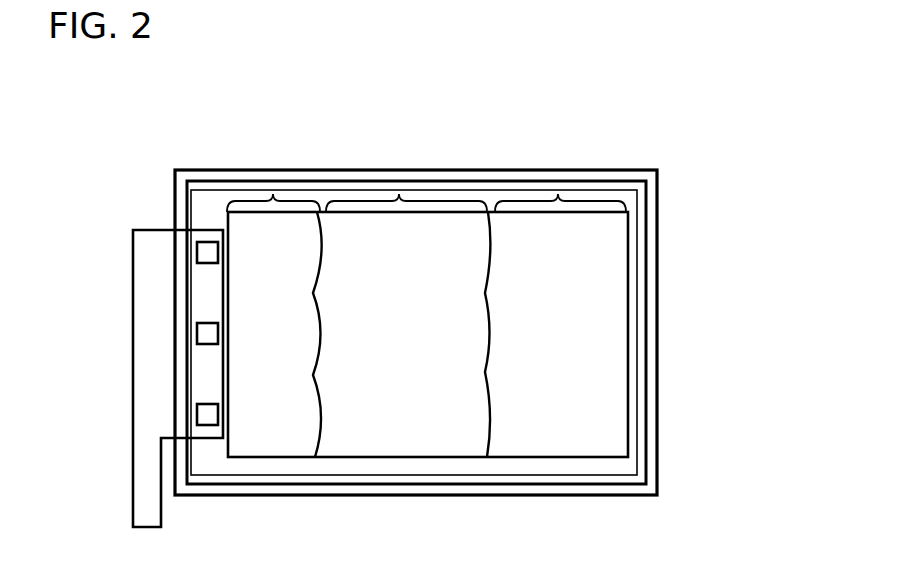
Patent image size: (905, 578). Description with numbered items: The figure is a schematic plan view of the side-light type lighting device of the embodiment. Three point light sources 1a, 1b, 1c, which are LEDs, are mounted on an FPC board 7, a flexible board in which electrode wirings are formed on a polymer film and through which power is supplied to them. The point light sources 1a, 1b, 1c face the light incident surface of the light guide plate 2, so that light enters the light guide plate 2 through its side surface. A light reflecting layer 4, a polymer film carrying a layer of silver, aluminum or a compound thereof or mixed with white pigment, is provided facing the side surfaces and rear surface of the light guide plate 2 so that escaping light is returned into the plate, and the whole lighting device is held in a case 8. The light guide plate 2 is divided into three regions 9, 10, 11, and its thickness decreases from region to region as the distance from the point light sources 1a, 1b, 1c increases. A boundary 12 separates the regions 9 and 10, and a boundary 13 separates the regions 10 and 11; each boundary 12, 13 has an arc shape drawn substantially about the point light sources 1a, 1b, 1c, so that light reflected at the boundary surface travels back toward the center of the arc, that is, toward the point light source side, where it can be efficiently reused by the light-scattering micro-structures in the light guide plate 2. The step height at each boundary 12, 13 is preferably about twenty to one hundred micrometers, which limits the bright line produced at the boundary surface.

The point light source 1a is at (197, 249).
The point light source 1b is at (197, 333).
The point light source 1c is at (197, 414).
The light guide plate 2 is at (628, 258).
The light reflecting layer 4 is at (627, 185).
The FPC board 7 is at (142, 463).
The case 8 is at (187, 173).
The region 9 is at (273, 194).
The region 10 is at (399, 194).
The region 11 is at (558, 194).
The boundary 12 is at (323, 430).
The boundary 13 is at (490, 432).